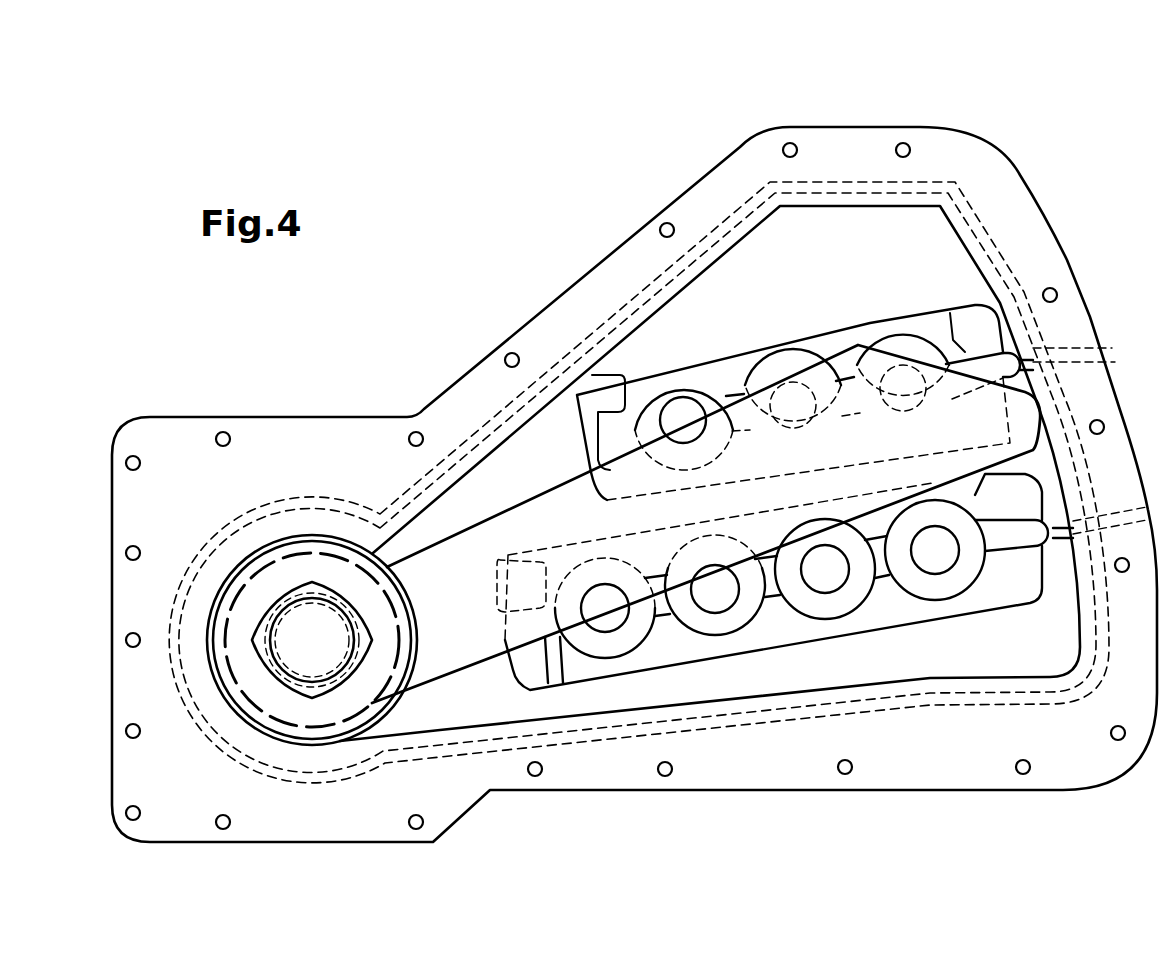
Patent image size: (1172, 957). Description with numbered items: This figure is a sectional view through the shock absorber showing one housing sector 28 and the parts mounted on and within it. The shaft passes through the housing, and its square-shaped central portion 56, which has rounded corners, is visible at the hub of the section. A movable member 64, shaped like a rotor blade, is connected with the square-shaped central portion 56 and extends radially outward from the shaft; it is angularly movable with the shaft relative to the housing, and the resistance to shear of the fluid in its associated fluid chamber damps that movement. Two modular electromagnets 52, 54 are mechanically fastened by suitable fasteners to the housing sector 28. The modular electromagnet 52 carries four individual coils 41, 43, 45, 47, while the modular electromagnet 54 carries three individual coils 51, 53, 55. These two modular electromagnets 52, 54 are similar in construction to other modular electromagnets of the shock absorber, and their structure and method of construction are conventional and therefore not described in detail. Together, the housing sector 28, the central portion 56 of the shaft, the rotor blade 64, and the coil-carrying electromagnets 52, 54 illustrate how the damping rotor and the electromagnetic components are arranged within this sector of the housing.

The housing sector 28 is at (173, 448).
The individual coil 41 is at (608, 658).
The individual coil 43 is at (730, 636).
The individual coil 45 is at (800, 613).
The individual coil 47 is at (815, 640).
The individual coil 51 is at (655, 390).
The modular electromagnet 52 is at (934, 600).
The individual coil 53 is at (778, 357).
The modular electromagnet 54 is at (927, 327).
The individual coil 55 is at (953, 337).
The square-shaped central portion 56 is at (322, 697).
The movable member 64 is at (557, 518).